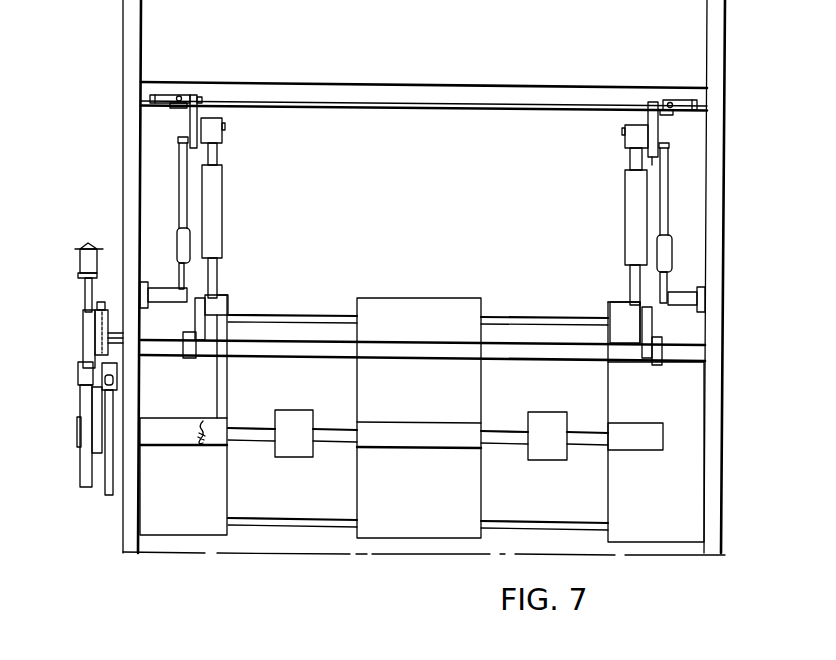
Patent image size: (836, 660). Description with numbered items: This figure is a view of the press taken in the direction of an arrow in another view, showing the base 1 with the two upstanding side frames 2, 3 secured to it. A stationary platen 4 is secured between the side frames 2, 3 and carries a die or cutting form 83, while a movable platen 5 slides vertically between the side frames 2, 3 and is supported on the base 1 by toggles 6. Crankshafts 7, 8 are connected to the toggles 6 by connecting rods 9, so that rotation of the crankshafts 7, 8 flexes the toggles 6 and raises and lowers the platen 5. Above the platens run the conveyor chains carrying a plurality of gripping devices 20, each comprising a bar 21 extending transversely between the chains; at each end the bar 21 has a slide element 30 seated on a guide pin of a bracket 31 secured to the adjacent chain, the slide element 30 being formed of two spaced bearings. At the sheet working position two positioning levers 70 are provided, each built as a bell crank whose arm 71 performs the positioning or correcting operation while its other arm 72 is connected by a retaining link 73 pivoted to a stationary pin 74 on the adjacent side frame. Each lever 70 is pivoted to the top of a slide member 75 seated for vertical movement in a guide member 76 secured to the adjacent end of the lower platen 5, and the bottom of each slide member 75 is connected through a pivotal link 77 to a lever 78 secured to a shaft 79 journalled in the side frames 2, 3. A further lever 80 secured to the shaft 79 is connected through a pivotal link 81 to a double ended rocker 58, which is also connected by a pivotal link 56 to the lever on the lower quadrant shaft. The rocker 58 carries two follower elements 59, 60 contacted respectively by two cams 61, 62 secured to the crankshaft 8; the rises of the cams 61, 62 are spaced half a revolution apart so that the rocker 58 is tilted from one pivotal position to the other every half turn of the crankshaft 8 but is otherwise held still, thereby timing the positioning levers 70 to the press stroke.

The base 1 is at (414, 537).
The side frame 2 is at (117, 62).
The side frame 3 is at (699, 51).
The stationary platen 4 is at (371, 32).
The movable platen 5 is at (395, 209).
The toggles 6 is at (357, 488).
The crankshaft 7 is at (216, 438).
The crankshaft 8 is at (182, 438).
The connecting rods 9 is at (294, 450).
The gripping device 20 is at (315, 107).
The bar 21 is at (377, 110).
The slide element 30 is at (184, 109).
The bracket 31 is at (164, 93).
The pivotal link 56 is at (85, 291).
The double ended rocker 58 is at (102, 380).
The follower element 59 is at (118, 366).
The follower element 60 is at (78, 373).
The cam 61 is at (105, 488).
The cam 62 is at (80, 470).
The positioning lever 70 is at (193, 125).
The arm 71 is at (193, 95).
The arm 72 is at (657, 158).
The retaining link 73 is at (180, 190).
The stationary pin 74 is at (188, 295).
The slide member 75 is at (217, 156).
The guide member 76 is at (222, 205).
The pivotal link 77 is at (195, 318).
The lever 78 is at (190, 358).
The shaft 79 is at (407, 352).
The lever 80 is at (107, 305).
The pivotal link 81 is at (83, 338).
The die or cutting form 83 is at (440, 97).